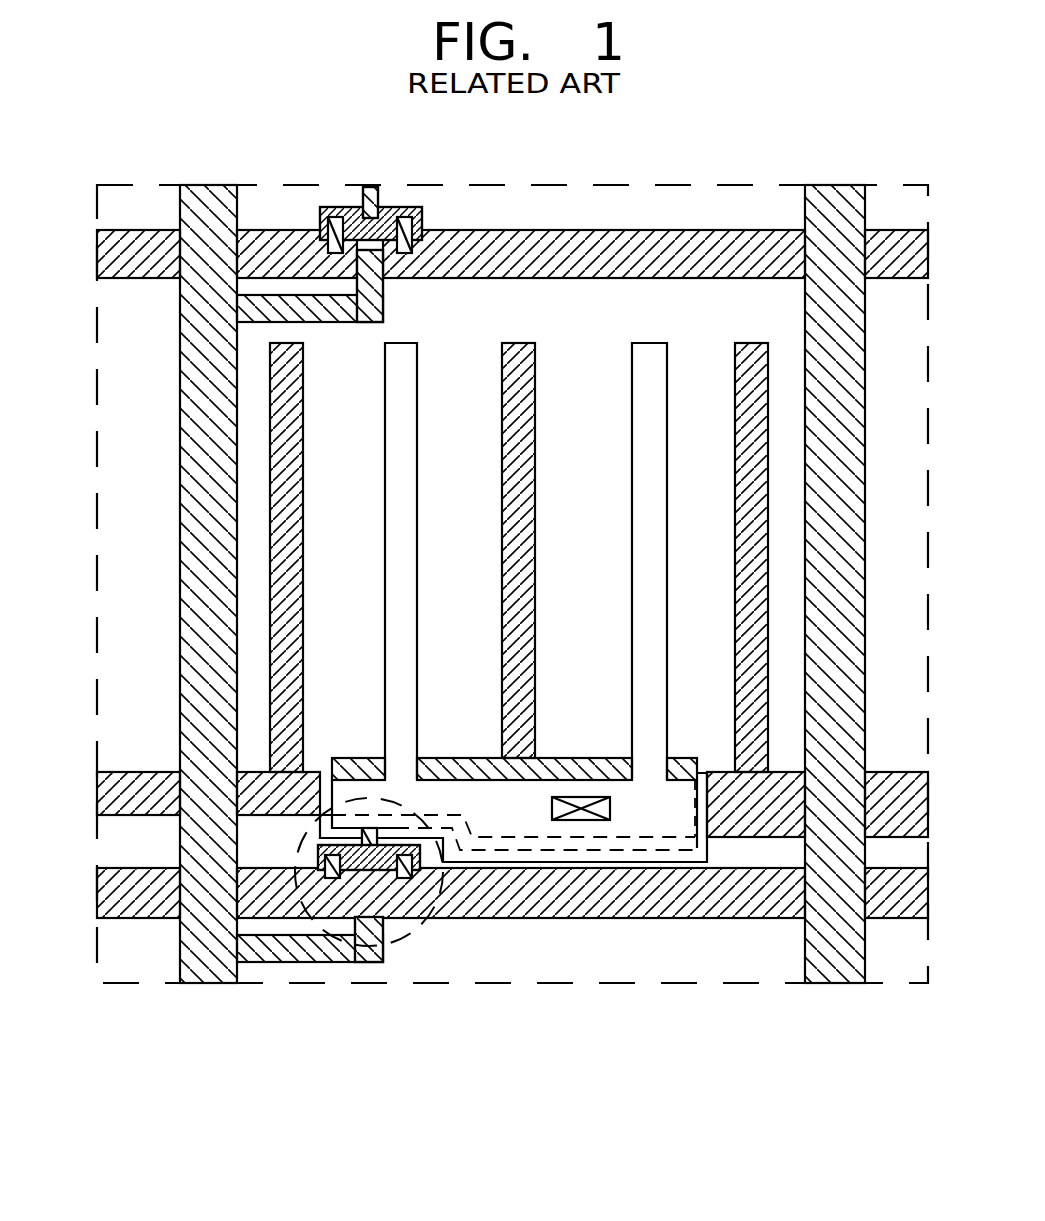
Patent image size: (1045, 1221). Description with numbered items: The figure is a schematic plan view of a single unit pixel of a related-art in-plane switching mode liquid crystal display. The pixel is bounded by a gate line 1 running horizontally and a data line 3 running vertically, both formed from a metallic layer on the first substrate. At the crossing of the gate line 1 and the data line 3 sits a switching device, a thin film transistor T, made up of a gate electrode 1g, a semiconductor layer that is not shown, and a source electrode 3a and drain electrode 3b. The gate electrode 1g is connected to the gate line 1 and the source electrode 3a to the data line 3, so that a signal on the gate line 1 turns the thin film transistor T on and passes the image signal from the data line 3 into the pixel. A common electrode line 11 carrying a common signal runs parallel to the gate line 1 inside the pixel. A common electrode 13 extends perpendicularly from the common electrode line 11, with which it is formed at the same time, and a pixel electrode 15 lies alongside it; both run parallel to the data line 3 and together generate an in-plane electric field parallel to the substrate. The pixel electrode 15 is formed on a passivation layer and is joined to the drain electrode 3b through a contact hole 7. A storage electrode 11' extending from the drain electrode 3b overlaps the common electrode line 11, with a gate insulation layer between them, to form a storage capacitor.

The gate line 1 is at (795, 890).
The gate electrode 1g is at (420, 912).
The data line 3 is at (180, 375).
The source electrode 3a is at (368, 880).
The drain electrode 3b is at (323, 900).
The contact hole 7 is at (580, 820).
The common electrode line 11 is at (512, 932).
The storage electrode 11' is at (513, 933).
The common electrode 13 is at (520, 355).
The pixel electrode 15 is at (650, 355).
The thin film transistor T is at (430, 905).